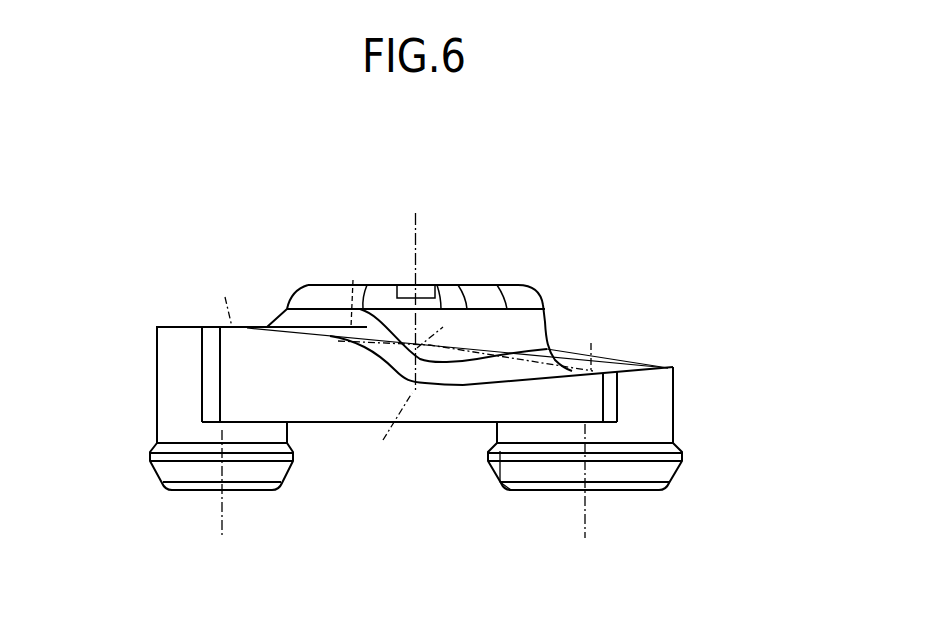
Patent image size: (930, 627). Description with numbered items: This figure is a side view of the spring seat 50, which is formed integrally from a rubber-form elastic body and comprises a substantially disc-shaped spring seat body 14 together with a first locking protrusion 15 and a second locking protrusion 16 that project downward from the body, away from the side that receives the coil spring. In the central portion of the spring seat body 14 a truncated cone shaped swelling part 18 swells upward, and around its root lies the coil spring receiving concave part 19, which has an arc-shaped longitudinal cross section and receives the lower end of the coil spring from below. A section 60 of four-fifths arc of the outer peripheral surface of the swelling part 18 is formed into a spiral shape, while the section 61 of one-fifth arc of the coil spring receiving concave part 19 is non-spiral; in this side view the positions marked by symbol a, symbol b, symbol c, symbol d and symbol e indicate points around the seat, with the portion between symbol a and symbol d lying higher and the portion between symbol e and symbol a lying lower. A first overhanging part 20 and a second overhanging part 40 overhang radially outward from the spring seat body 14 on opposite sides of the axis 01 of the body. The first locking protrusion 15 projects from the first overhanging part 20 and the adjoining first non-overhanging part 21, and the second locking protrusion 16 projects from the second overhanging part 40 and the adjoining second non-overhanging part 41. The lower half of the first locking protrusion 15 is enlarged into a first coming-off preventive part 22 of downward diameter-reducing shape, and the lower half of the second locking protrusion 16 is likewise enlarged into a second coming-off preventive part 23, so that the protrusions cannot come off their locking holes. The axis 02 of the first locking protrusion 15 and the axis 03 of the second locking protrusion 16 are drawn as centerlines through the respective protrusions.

The spring seat body 14 is at (157, 305).
The first locking protrusion 15 is at (680, 497).
The second locking protrusion 16 is at (156, 500).
The swelling part 18 is at (512, 292).
The coil spring receiving concave part 19 is at (618, 363).
The first overhanging part 20 is at (656, 404).
The first non-overhanging part 21 is at (530, 412).
The first coming-off preventive part 22 is at (682, 460).
The second coming-off preventive part 23 is at (150, 462).
The second overhanging part 40 is at (168, 365).
The second non-overhanging part 41 is at (238, 347).
The spring seat 50 is at (320, 230).
The section of four-fifths arc of the outer peripheral surface of the swelling part 60 is at (547, 322).
The section of one-fifth arc of the coil spring receiving concave part 61 is at (282, 312).
The axis of the spring seat body 01 is at (416, 284).
The axis of the first locking protrusion 02 is at (587, 501).
The axis of the second locking protrusion 03 is at (222, 501).
The symbol a is at (392, 433).
The symbol b is at (586, 340).
The symbol c is at (465, 340).
The symbol d is at (224, 293).
The symbol e is at (357, 287).